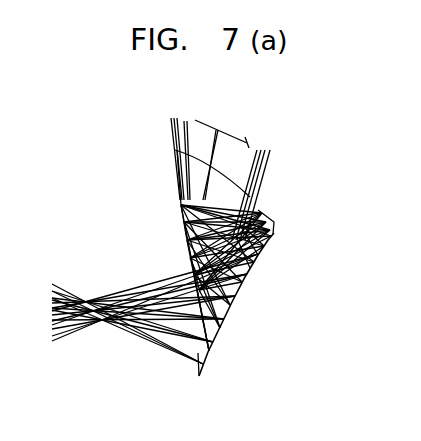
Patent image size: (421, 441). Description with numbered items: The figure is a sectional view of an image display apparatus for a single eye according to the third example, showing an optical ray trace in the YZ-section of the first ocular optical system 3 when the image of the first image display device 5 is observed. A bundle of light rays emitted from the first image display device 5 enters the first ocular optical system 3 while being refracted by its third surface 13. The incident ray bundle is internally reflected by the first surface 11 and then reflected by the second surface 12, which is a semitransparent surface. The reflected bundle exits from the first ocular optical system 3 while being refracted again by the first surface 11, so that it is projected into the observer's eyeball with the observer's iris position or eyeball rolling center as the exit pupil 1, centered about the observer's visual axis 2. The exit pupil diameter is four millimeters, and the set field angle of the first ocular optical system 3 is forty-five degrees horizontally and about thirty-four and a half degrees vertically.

The observer's pupil position 1 is at (84, 302).
The observer's visual axis 2 is at (160, 300).
The first ocular optical system 3 is at (274, 222).
The first image display device 5 is at (247, 143).
The first surface of the first ocular optical system 11 is at (178, 208).
The second surface of the first ocular optical system 12 is at (248, 290).
The third surface of the first ocular optical system 13 is at (262, 213).